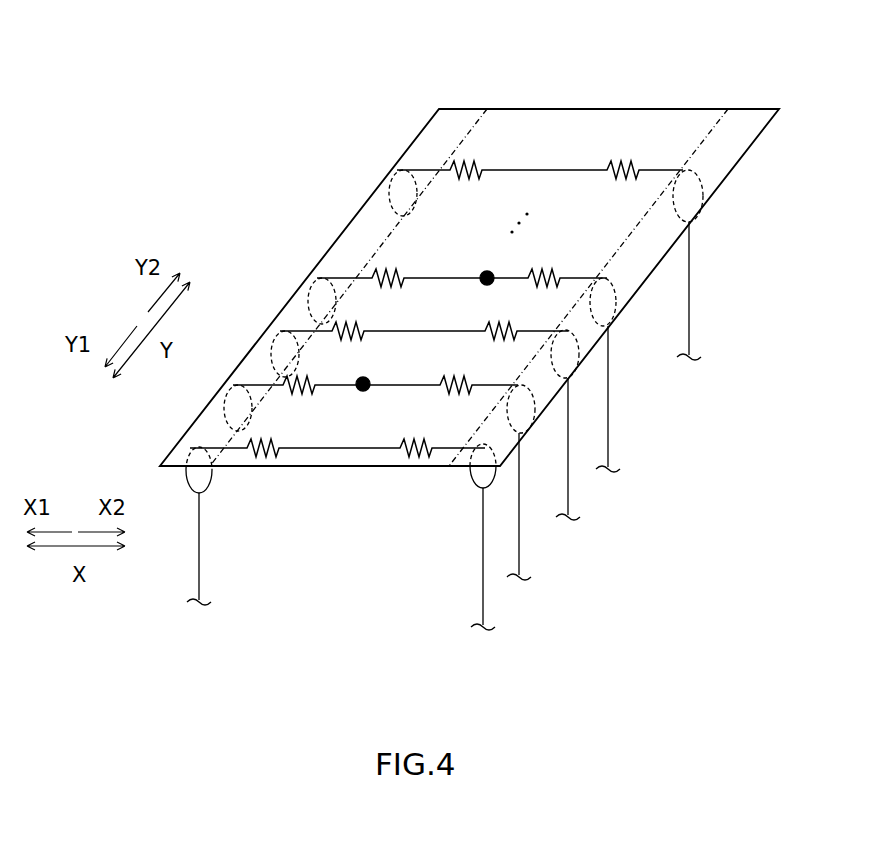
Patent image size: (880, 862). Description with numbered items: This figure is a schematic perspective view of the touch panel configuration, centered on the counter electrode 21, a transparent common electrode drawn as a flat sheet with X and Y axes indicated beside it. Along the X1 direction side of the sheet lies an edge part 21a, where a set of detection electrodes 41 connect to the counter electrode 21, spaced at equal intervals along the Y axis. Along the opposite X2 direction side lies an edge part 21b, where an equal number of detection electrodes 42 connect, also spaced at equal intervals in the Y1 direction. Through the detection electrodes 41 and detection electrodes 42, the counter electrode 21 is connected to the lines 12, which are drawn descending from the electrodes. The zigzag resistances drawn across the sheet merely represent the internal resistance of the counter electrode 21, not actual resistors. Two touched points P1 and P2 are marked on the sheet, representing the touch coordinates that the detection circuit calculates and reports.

The counter electrode 21 is at (590, 123).
The edge part 21a is at (447, 123).
The edge part 21b is at (738, 130).
The detection electrodes 41 is at (390, 180).
The detection electrodes 42 is at (704, 195).
The lines 12 is at (692, 297).
The touch coordinate point P1 is at (487, 277).
The touch coordinate point P2 is at (363, 383).